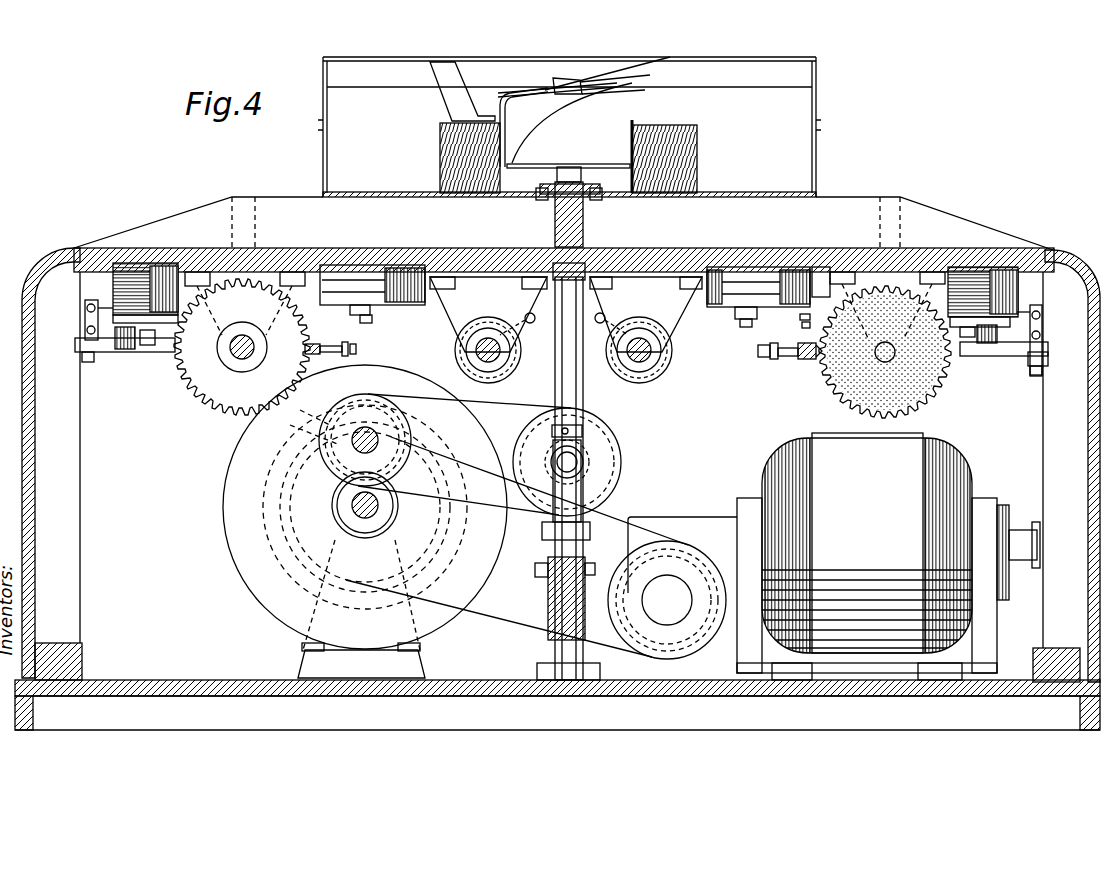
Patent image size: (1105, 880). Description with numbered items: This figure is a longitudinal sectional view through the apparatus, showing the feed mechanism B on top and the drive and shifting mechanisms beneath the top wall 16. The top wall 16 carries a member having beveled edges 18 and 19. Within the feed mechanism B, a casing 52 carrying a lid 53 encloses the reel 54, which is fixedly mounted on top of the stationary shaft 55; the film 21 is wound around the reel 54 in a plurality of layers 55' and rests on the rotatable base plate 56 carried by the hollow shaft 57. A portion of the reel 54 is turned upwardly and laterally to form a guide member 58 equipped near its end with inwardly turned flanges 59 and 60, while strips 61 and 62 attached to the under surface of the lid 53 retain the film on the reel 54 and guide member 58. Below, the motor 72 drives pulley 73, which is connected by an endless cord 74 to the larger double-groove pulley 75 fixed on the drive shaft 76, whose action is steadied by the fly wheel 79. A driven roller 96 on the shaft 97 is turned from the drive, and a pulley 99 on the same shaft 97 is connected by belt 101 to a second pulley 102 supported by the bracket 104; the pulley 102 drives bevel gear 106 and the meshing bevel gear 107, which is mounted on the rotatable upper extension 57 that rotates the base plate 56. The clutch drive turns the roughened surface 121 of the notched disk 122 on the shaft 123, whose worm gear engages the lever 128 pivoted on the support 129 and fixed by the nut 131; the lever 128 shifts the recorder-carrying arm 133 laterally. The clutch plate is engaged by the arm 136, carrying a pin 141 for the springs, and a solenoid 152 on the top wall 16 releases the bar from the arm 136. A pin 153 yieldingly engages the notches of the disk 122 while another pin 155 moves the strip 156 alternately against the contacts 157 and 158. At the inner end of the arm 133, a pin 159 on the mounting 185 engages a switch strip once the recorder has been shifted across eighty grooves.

The top wall 16 is at (790, 256).
The beveled edge 18 is at (935, 218).
The beveled edge 19 is at (175, 225).
The film 21 is at (431, 160).
The casing 52 is at (816, 150).
The lid 53 is at (800, 58).
The reel 54 is at (636, 122).
The stationary shaft 55 is at (557, 405).
The layers 55' is at (687, 149).
The rotatable base plate 56 is at (745, 192).
The hollow shaft 57 is at (584, 200).
The guide member 58 is at (562, 104).
The inwardly turned flange 59 is at (590, 85).
The inwardly turned flange 60 is at (545, 82).
The strip 61 is at (442, 96).
The strip 62 is at (650, 72).
The feed mechanism B is at (818, 107).
The motor 72 is at (828, 436).
The pulley 73 is at (648, 650).
The endless cord 74 is at (520, 618).
The pulley 75 is at (262, 598).
The drive shaft 76 is at (365, 518).
The fly wheel 79 is at (225, 538).
The driven roller 96 is at (318, 430).
The shaft 97 is at (378, 440).
The pulley 99 is at (368, 396).
The belt 101 is at (516, 410).
The pulley 102 is at (620, 446).
The bracket 104 is at (600, 494).
The bevel gear 106 is at (612, 478).
The bevel gear 107 is at (600, 432).
The roughened surface 121 is at (830, 380).
The notched disk 122 is at (948, 378).
The shaft 123 is at (888, 360).
The lever 128 is at (818, 280).
The support 129 is at (740, 308).
The nut 131 is at (750, 320).
The arm 133 is at (652, 360).
The arm 136 is at (1012, 357).
The pin 141 is at (1042, 325).
The solenoid 152 is at (1005, 265).
The pin 153 is at (800, 360).
The pin 155 is at (807, 316).
The strip 156 is at (773, 360).
The contact 157 is at (762, 357).
The contact 158 is at (795, 331).
The pin 159 is at (608, 320).
The mounting 185 is at (662, 362).